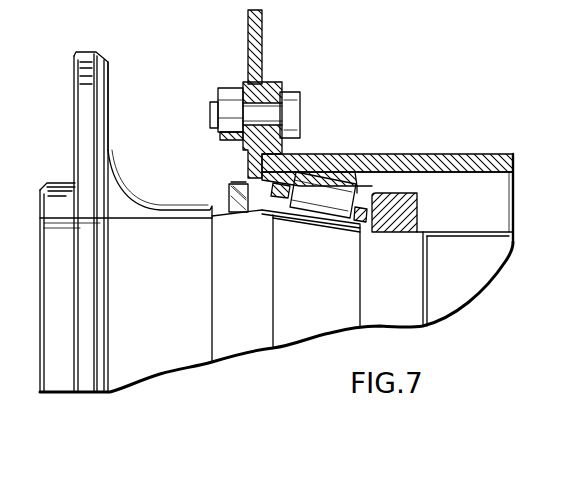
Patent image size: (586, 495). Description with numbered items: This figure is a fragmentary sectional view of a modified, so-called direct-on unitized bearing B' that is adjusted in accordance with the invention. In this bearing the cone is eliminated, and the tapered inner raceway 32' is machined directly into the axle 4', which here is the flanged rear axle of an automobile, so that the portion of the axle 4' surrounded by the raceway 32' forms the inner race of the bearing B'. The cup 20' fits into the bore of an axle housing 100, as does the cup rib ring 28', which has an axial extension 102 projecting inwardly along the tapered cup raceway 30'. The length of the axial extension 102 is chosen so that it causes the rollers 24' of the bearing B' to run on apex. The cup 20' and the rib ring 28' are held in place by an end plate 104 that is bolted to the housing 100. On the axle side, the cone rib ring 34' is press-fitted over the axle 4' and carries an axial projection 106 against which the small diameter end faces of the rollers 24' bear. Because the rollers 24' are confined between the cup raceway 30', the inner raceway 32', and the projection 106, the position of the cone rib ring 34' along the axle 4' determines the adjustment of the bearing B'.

The axle 4' is at (276, 236).
The end plate 104 is at (247, 160).
The axle housing 100 is at (478, 162).
The cup rib ring 28' is at (309, 128).
The tapered cup raceway 30' is at (332, 147).
The cup 20' is at (364, 167).
The tapered inner raceway 32' is at (286, 254).
The axial extension 102 is at (243, 179).
The rollers 24' is at (435, 188).
The cone rib ring 34' is at (430, 212).
The axial projection 106 is at (369, 228).
The direct-on unitized bearing B' is at (255, 260).